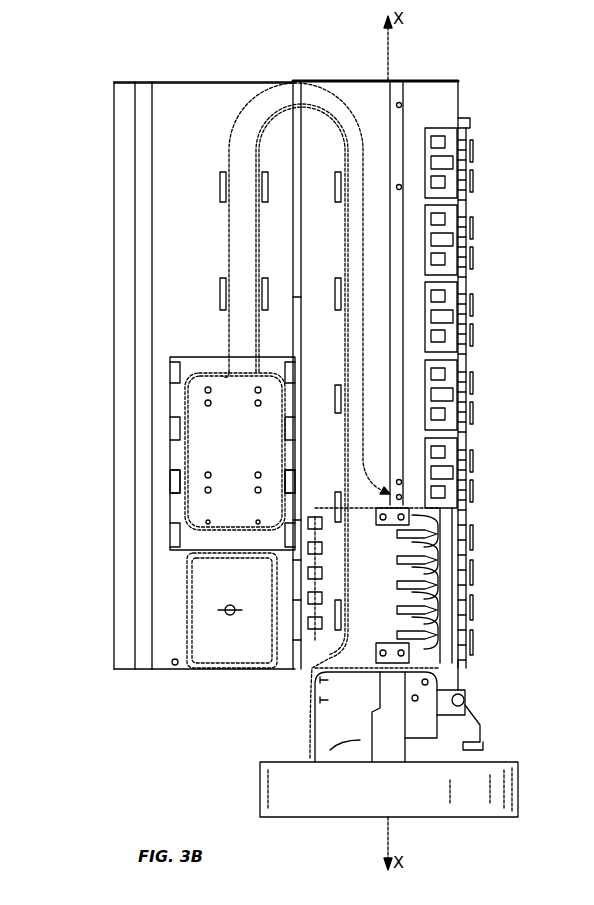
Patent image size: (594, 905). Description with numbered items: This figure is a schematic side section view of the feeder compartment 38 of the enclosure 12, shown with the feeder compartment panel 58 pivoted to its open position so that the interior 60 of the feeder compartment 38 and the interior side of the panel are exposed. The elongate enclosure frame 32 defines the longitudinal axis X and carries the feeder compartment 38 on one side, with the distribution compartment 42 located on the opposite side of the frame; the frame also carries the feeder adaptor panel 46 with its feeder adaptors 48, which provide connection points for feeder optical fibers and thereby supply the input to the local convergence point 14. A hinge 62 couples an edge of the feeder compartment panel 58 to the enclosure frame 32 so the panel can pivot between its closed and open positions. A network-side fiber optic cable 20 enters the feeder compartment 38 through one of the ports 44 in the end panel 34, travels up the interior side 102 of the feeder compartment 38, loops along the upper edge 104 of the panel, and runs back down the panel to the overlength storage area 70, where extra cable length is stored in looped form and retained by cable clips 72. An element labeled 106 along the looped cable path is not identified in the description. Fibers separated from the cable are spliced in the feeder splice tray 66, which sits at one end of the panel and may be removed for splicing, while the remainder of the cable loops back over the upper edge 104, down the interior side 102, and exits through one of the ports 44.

The enclosure 12 is at (243, 47).
The upper edge 104 is at (188, 82).
The outer cable loop 106 is at (243, 135).
The interior side of the feeder compartment 102 is at (352, 97).
The enclosure frame 32 is at (393, 120).
The local convergence point 14 is at (430, 82).
The feeder compartment panel 58 is at (165, 173).
The feeder compartment 38 is at (283, 240).
The interior of the feeder compartment 60 is at (328, 266).
The distribution compartment 42 is at (520, 281).
The network-side fiber optic cable 20 is at (347, 368).
The overlength storage area 70 is at (220, 418).
The cable clips 72 is at (172, 487).
The feeder adaptor panel 46 is at (400, 506).
The feeder adaptors 48 is at (393, 530).
The hinge 62 is at (295, 600).
The feeder splice tray 66 is at (218, 657).
The ports 44 is at (300, 757).
The end panel 34 is at (288, 768).